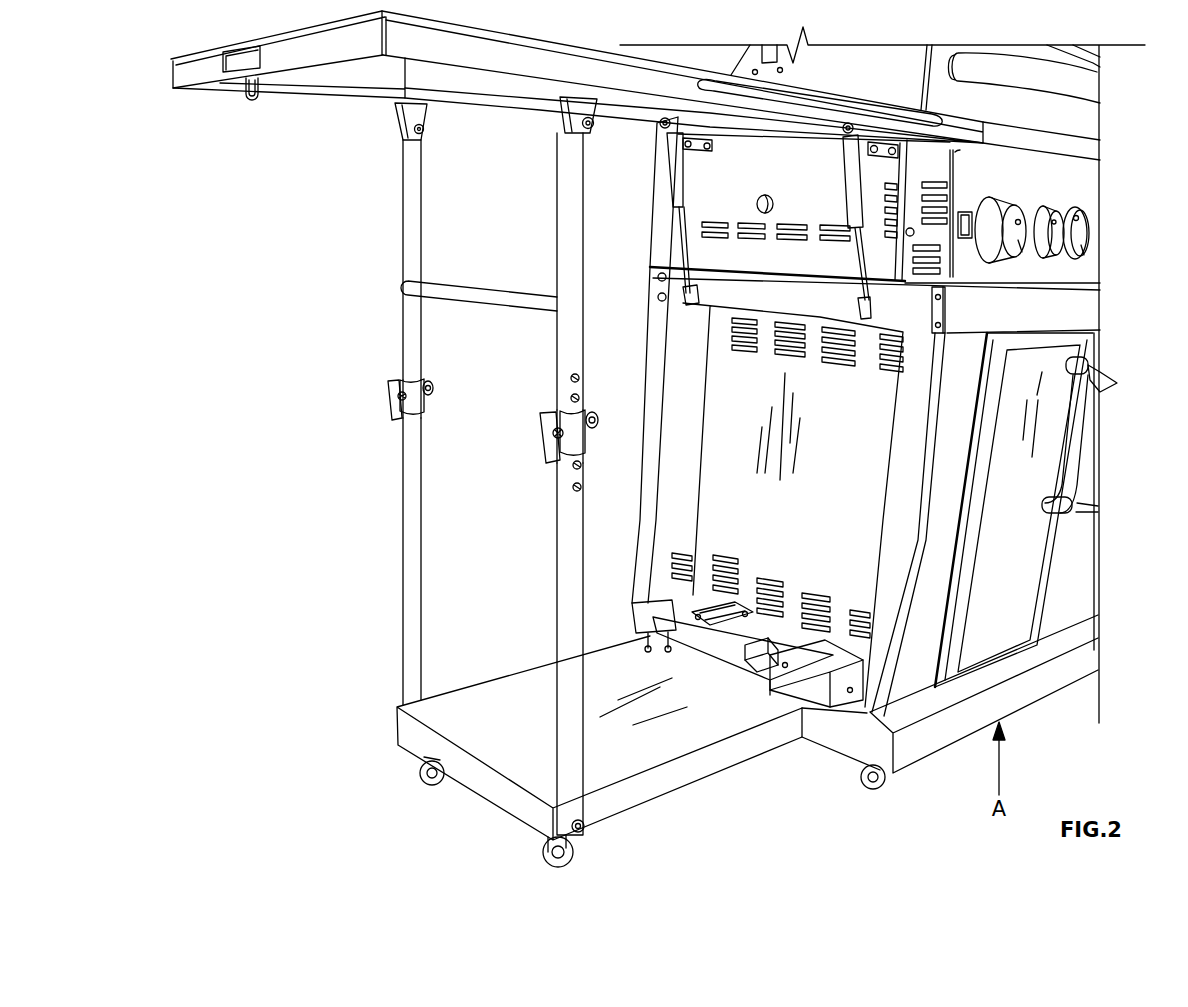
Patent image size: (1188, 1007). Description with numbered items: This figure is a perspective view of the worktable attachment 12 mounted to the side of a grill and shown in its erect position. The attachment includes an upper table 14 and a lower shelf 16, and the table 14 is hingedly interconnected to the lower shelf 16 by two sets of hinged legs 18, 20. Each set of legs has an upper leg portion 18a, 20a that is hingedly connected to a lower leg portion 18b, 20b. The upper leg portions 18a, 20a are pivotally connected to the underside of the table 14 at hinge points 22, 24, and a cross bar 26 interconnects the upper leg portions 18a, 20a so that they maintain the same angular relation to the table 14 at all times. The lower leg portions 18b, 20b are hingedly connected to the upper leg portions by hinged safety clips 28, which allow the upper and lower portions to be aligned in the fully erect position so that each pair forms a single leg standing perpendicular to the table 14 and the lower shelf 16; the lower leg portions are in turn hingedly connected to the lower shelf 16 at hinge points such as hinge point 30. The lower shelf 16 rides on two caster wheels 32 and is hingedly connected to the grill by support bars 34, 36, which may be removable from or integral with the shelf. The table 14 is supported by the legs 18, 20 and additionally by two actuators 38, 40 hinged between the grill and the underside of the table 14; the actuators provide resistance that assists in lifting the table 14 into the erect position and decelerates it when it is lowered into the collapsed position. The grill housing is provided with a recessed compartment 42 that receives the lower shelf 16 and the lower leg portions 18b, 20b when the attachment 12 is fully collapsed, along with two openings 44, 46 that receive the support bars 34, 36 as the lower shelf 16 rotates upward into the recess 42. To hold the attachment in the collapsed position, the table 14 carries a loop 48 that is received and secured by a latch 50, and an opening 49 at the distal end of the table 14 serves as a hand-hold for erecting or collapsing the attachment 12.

The worktable attachment 12 is at (280, 425).
The table 14 is at (583, 47).
The lower shelf 16 is at (684, 742).
The hinged legs 18 is at (545, 511).
The upper leg portion 18a is at (553, 240).
The lower leg portion 18b is at (553, 610).
The hinged legs 20 is at (392, 451).
The upper leg portion 20a is at (398, 212).
The lower leg portion 20b is at (398, 580).
The hinge point 22 is at (590, 130).
The hinge point 24 is at (428, 129).
The cross bar 26 is at (494, 310).
The hinged safety clips 28 is at (438, 405).
The hinge point 30 is at (553, 846).
The caster wheels 32 is at (435, 783).
The support bar 34 is at (800, 678).
The support bar 36 is at (672, 612).
The actuator 38 is at (847, 180).
The actuator 40 is at (685, 187).
The recessed compartment 42 is at (735, 405).
The opening 44 is at (843, 680).
The opening 46 is at (733, 602).
The loop 48 is at (249, 100).
The opening 49 is at (222, 67).
The latch 50 is at (770, 648).